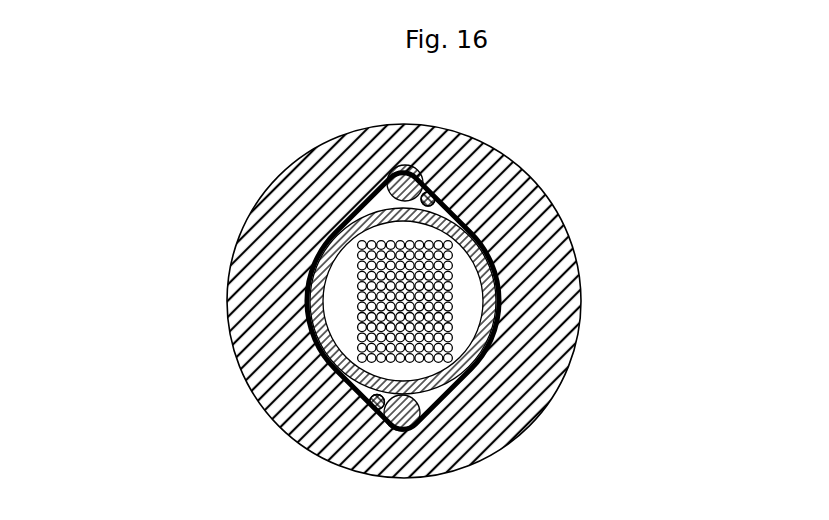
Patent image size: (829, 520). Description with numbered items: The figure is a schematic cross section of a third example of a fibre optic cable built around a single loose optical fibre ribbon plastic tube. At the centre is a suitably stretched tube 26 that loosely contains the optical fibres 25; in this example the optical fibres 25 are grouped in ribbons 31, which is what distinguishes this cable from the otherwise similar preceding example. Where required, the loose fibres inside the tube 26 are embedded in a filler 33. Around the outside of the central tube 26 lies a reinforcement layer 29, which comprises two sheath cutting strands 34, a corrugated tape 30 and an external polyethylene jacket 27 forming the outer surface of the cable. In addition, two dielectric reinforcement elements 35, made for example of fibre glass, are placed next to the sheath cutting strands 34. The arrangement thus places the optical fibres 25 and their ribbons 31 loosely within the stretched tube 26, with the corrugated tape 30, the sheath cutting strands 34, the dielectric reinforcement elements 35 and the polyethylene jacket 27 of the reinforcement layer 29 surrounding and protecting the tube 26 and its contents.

The optical fibres 25 is at (554, 302).
The tube 26 is at (271, 301).
The external polyethylene jacket 27 is at (302, 301).
The reinforcement layer 29 is at (227, 374).
The corrugated tape 30 is at (540, 311).
The ribbons 31 is at (492, 356).
The filler 33 is at (438, 316).
The sheath cutting strands 34 is at (561, 151).
The dielectric reinforcement elements 35 is at (318, 141).